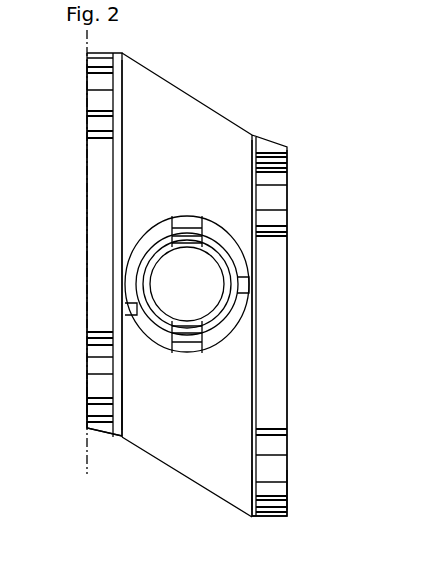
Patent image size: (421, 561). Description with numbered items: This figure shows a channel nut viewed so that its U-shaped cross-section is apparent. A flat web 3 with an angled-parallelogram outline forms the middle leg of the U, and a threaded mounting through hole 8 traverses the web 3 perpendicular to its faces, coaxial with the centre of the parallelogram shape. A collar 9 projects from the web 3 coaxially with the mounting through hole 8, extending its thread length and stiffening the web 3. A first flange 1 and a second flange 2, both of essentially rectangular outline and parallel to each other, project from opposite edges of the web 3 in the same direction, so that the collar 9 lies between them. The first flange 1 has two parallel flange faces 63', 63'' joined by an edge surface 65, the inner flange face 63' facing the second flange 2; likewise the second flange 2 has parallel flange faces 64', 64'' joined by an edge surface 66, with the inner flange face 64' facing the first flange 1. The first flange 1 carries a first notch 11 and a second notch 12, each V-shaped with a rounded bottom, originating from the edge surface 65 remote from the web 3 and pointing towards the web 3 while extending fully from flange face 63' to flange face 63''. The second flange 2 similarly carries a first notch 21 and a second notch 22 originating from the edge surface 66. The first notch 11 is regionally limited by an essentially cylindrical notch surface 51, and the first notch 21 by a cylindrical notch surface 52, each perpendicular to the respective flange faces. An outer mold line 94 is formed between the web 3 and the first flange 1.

The first flange 1 is at (80, 245).
The second flange 2 is at (292, 325).
The web 3 is at (178, 123).
The mounting through hole 8 is at (181, 289).
The collar 9 is at (142, 284).
The first notch 11 is at (76, 229).
The second notch 12 is at (107, 383).
The first notch 21 is at (298, 325).
The second notch 22 is at (274, 482).
The notch surface 51 is at (77, 241).
The notch surface 52 is at (296, 325).
The flange face 63' is at (155, 239).
The flange face 63'' is at (49, 240).
The flange face 64' is at (227, 325).
The flange face 64'' is at (310, 330).
The edge surface 65 is at (67, 65).
The edge surface 66 is at (300, 167).
The outer mold line 94 is at (87, 474).